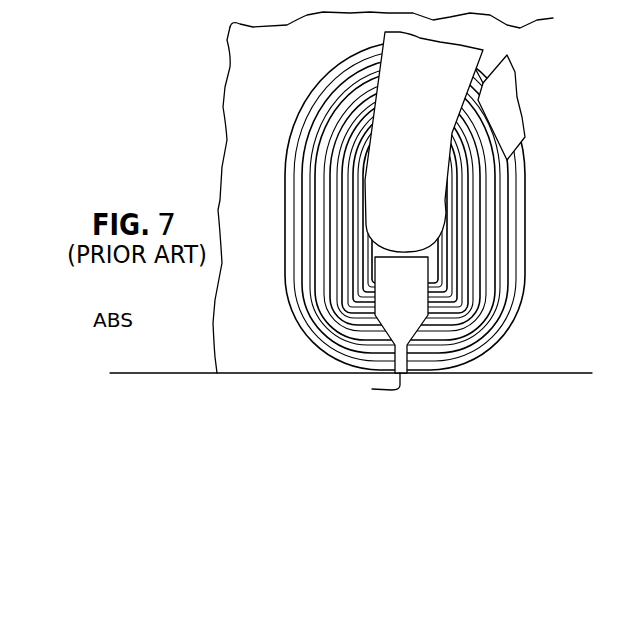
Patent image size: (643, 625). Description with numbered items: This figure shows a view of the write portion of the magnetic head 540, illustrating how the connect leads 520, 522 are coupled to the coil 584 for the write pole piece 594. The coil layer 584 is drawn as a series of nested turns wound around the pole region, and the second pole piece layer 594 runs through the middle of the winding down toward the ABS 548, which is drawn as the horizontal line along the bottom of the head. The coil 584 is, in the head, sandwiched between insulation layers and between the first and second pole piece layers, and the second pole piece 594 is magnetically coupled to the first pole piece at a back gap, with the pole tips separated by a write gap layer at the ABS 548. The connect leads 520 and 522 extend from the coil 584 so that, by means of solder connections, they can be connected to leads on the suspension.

The connect lead 520 is at (428, 139).
The connect lead 522 is at (517, 98).
The magnetic head 540 is at (537, 186).
The ABS 548 is at (160, 373).
The coil layer 584 is at (497, 277).
The second pole piece layer 594 is at (413, 306).